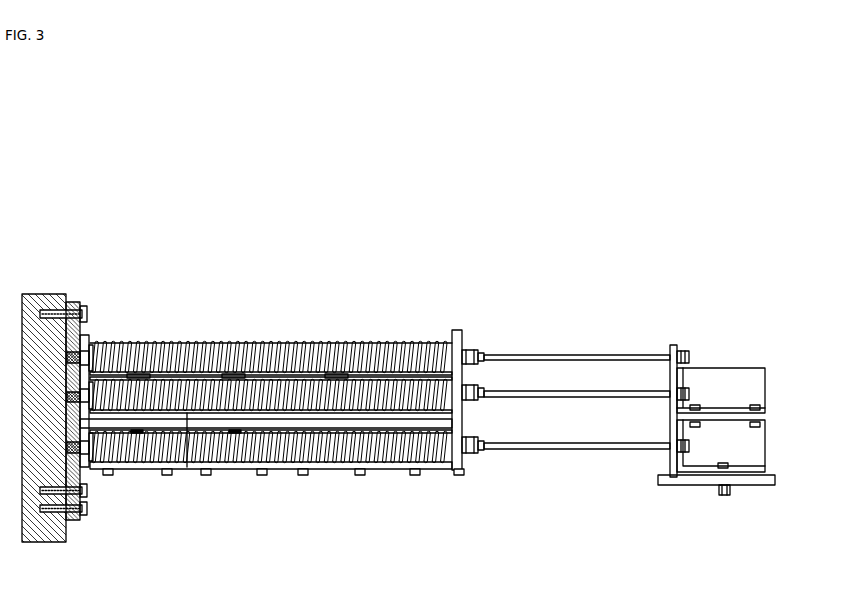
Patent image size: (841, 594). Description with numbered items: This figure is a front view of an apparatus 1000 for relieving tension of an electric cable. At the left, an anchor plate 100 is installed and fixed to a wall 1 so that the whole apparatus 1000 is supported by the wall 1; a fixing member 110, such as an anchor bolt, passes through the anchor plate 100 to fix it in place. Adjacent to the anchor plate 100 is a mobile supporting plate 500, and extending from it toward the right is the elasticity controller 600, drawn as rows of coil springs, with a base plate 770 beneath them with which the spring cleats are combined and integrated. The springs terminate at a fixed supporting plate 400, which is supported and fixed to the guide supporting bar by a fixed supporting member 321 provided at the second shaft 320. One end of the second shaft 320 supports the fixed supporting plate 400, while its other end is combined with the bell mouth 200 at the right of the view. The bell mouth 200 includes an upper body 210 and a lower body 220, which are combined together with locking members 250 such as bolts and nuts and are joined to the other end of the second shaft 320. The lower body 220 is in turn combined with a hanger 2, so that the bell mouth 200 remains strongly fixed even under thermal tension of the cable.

The apparatus for relieving tension of an electric cable 1000 is at (90, 192).
The wall 1 is at (42, 294).
The anchor plate 100 is at (74, 302).
The fixing member 110 is at (95, 318).
The mobile supporting plate 500 is at (90, 345).
The elasticity controller 600 is at (263, 343).
The base plate 770 is at (416, 469).
The fixed supporting plate 400 is at (457, 330).
The fixed supporting member 321 is at (471, 350).
The second shaft 320 is at (557, 355).
The locking member 250 is at (668, 365).
The bell mouth 200 is at (756, 293).
The upper body 210 is at (700, 393).
The lower body 220 is at (740, 440).
The hanger 2 is at (741, 487).